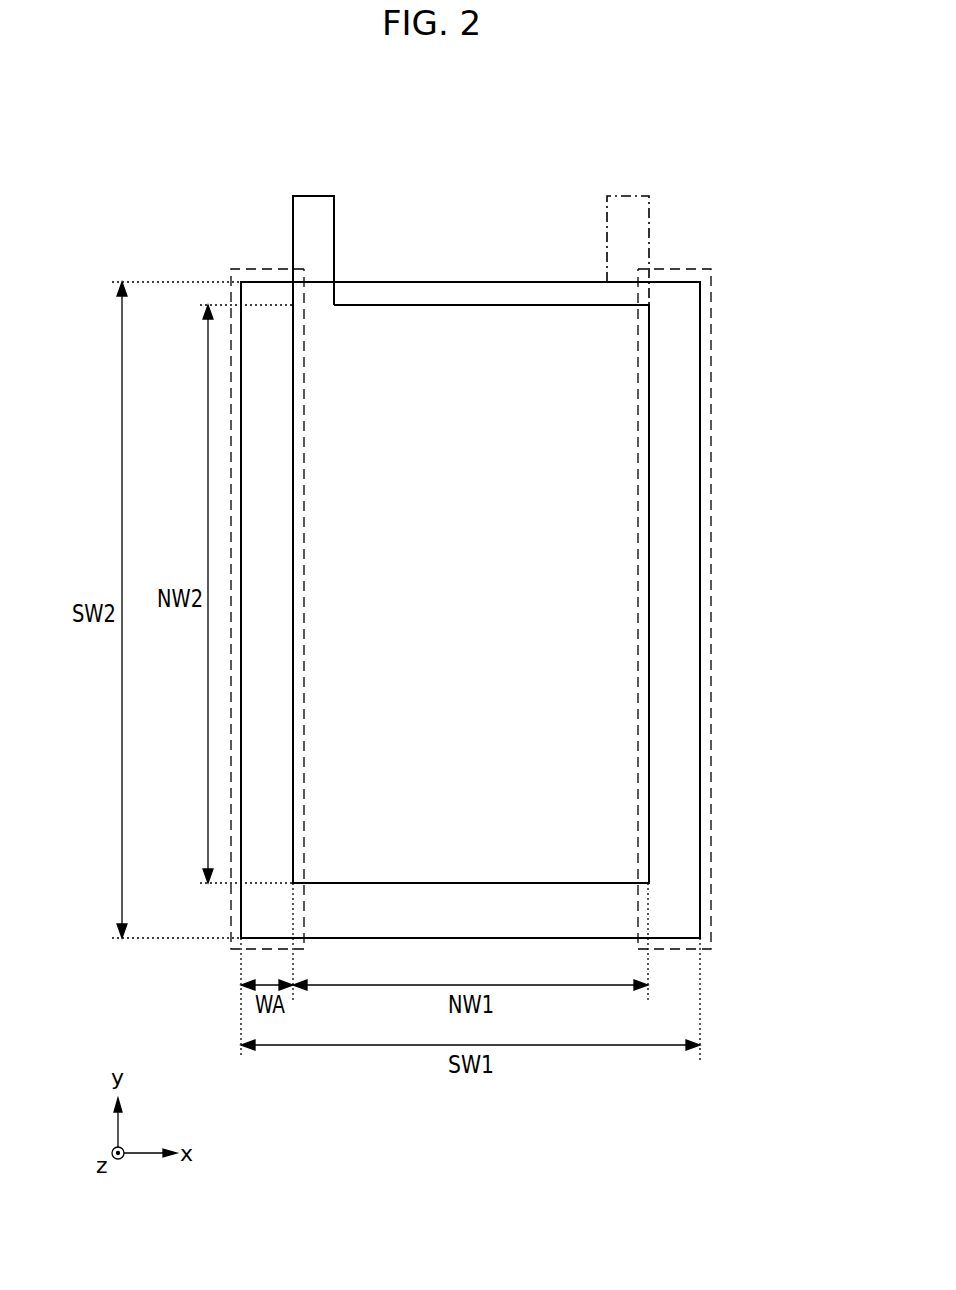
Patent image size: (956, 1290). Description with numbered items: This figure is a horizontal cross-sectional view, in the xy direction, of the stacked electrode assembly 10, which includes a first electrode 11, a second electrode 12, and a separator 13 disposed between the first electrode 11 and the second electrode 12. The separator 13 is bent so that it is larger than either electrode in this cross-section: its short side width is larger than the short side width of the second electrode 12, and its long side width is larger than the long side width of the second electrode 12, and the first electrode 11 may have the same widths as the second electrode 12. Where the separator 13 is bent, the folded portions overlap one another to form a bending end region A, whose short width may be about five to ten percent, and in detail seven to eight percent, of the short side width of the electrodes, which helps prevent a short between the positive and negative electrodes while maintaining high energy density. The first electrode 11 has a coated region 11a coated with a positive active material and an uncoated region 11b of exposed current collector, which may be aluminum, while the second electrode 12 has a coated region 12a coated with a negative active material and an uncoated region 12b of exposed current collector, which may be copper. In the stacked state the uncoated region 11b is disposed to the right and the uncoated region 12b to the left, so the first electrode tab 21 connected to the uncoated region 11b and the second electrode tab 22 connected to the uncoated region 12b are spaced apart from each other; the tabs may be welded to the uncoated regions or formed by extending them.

The stacked electrode assembly 10 is at (484, 131).
The first electrode 11 is at (597, 532).
The coated region 11a is at (508, 375).
The uncoated region 11b is at (625, 437).
The second electrode 12 is at (592, 630).
The coated region 12a is at (447, 393).
The uncoated region 12b is at (321, 360).
The separator 13 is at (700, 690).
The first electrode tab 21 is at (649, 208).
The second electrode tab 22 is at (293, 210).
The bending end region A is at (710, 805).